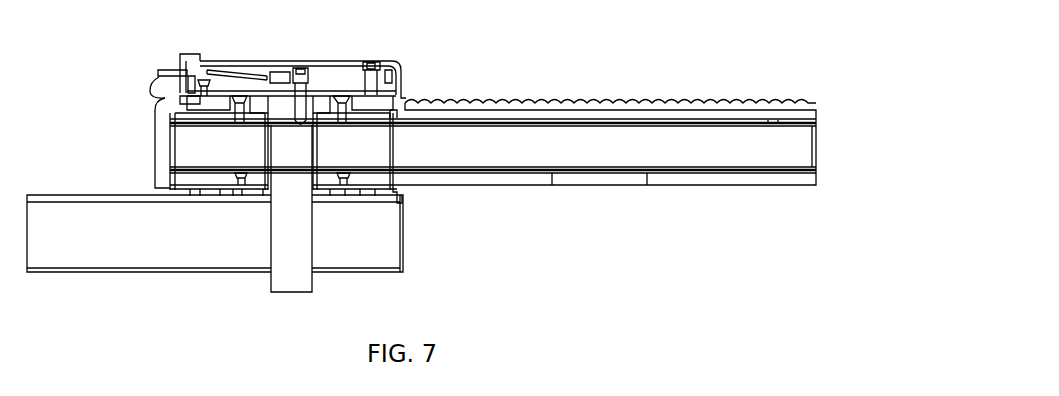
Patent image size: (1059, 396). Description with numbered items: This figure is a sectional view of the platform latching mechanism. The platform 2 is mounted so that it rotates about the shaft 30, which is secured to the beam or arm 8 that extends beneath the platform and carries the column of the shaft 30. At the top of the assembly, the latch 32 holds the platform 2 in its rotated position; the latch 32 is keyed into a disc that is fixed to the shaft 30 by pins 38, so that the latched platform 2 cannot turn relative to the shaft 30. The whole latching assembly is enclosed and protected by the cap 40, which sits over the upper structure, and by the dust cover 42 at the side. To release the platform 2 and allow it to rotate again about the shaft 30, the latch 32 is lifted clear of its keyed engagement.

The platform 2 is at (655, 101).
The beam or arm 8 is at (148, 275).
The shaft 30 is at (293, 283).
The latch 32 is at (172, 65).
The pins 38 is at (190, 91).
The cap 40 is at (404, 72).
The dust cover 42 is at (178, 84).